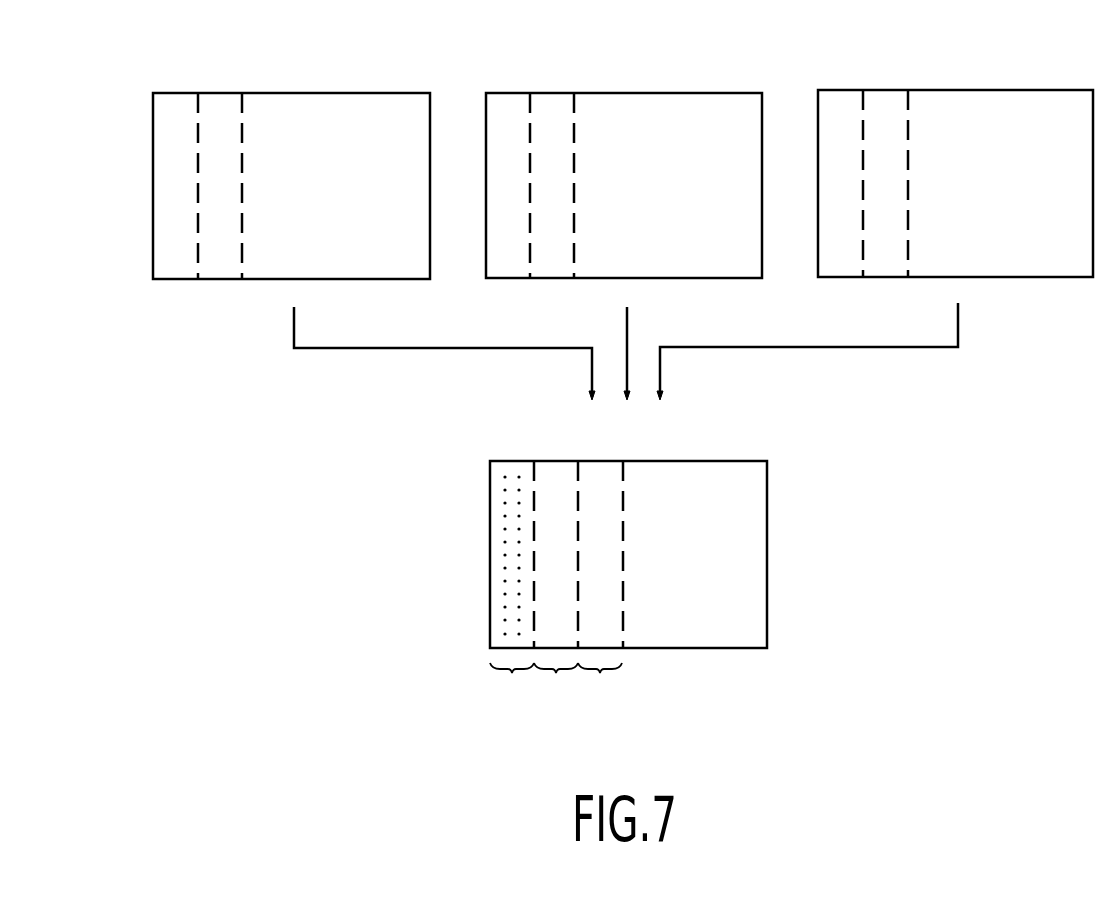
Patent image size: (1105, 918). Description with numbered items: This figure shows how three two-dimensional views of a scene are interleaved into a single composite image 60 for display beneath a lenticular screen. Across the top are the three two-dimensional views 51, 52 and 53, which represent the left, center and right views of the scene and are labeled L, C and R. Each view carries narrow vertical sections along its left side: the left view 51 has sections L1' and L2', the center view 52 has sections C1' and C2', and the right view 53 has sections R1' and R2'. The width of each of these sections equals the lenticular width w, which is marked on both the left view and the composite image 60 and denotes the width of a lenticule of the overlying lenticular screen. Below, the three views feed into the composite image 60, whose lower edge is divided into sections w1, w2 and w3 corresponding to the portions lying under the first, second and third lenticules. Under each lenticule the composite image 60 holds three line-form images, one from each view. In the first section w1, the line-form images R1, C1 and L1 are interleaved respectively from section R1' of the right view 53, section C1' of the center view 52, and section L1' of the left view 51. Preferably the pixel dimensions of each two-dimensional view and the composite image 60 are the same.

The 2D view 51 is at (364, 103).
The 2D view 52 is at (698, 103).
The 2D view 53 is at (1028, 100).
The composite image 60 is at (734, 470).
The section of 2D view 51 L1' is at (162, 163).
The section of 2D view 51 L2' is at (207, 151).
The section of 2D view 52 C1' is at (493, 162).
The section of 2D view 52 C2' is at (538, 150).
The section of 2D view 53 R1' is at (825, 160).
The section of 2D view 53 R2' is at (871, 149).
The line-form image L1 is at (556, 512).
The line-form image C1 is at (498, 531).
The line-form image R1 is at (475, 555).
The lenticular width w is at (220, 323).
The section of the composite image w1 is at (512, 681).
The section of the composite image w2 is at (556, 681).
The section of the composite image w3 is at (600, 681).